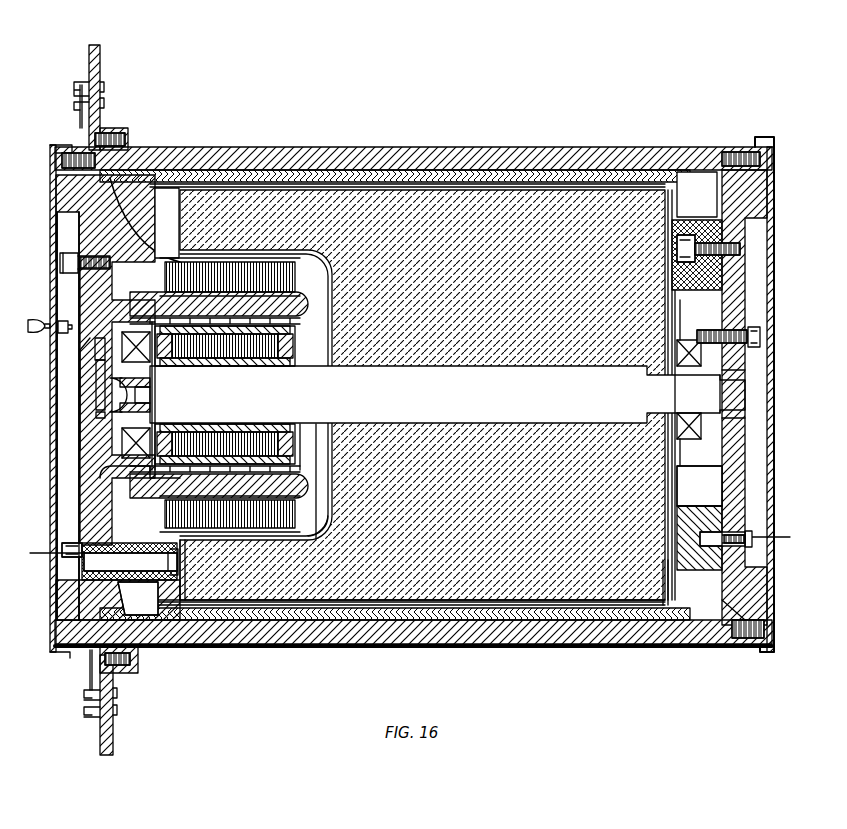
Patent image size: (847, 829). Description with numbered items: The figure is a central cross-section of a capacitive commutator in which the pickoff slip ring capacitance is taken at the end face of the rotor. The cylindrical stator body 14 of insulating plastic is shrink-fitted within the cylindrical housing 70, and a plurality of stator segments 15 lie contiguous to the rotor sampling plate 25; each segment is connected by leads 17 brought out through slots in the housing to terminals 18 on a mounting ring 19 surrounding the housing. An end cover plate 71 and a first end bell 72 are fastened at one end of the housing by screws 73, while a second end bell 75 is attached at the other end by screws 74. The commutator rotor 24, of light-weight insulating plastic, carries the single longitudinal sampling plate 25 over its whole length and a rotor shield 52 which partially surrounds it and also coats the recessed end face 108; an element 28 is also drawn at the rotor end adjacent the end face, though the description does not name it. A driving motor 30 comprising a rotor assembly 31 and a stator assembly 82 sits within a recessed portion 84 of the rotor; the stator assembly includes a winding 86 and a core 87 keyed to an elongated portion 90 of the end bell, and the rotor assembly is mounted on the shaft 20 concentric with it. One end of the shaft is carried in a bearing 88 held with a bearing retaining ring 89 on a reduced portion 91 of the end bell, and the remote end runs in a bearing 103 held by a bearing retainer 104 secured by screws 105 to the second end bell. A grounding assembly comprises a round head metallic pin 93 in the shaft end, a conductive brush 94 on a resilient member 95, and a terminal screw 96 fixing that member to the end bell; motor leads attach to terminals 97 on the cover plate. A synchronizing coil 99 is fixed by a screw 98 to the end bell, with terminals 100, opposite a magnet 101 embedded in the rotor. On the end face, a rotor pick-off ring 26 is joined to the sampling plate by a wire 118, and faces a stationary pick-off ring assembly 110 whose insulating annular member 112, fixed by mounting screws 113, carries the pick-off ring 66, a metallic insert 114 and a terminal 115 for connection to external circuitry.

The cylindrical stator body 14 is at (511, 172).
The stator segments 15 is at (250, 180).
The leads 17 is at (78, 128).
The terminals 18 is at (74, 100).
The mounting ring 19 is at (128, 118).
The shaft 20 is at (485, 400).
The commutator rotor 24 is at (586, 593).
The rotor sampling plate 25 is at (385, 190).
The rotor pick-off ring 26 is at (670, 575).
The rotor end plate 28 is at (676, 292).
The driving motor 30 is at (120, 486).
The rotor assembly 31 is at (286, 360).
The rotor shield 52 is at (330, 326).
The pick-off ring 66 is at (686, 500).
The cylindrical housing 70 is at (606, 150).
The end cover plate 71 is at (50, 250).
The first end bell 72 is at (105, 232).
The screws 73 is at (58, 160).
The screws 74 is at (775, 158).
The second end bell 75 is at (752, 200).
The stator assembly 82 is at (270, 300).
The recessed portion 84 is at (326, 463).
The winding 86 is at (298, 303).
The core 87 is at (166, 285).
The bearing 88 is at (128, 342).
The bearing retaining ring 89 is at (118, 360).
The elongated portion 90 is at (167, 223).
The reduced portion 91 is at (148, 342).
The round head metallic pin 93 is at (116, 406).
The electrically conductive brush 94 is at (98, 418).
The resilient member 95 is at (100, 405).
The terminal screw 96 is at (68, 254).
The terminals 97 is at (36, 320).
The screw 98 is at (72, 543).
The synchronizing coil 99 is at (138, 582).
The terminals 100 is at (60, 553).
The magnet 101 is at (196, 560).
The bearing 103 is at (688, 340).
The bearing retainer 104 is at (748, 372).
The screws 105 is at (768, 331).
The recessed end face 108 is at (318, 529).
The stationary pick-off ring assembly 110 is at (692, 588).
The annular member 112 is at (704, 520).
The mounting screws 113 is at (742, 247).
The metallic insert 114 is at (692, 540).
The terminal 115 is at (759, 547).
The wire 118 is at (672, 200).